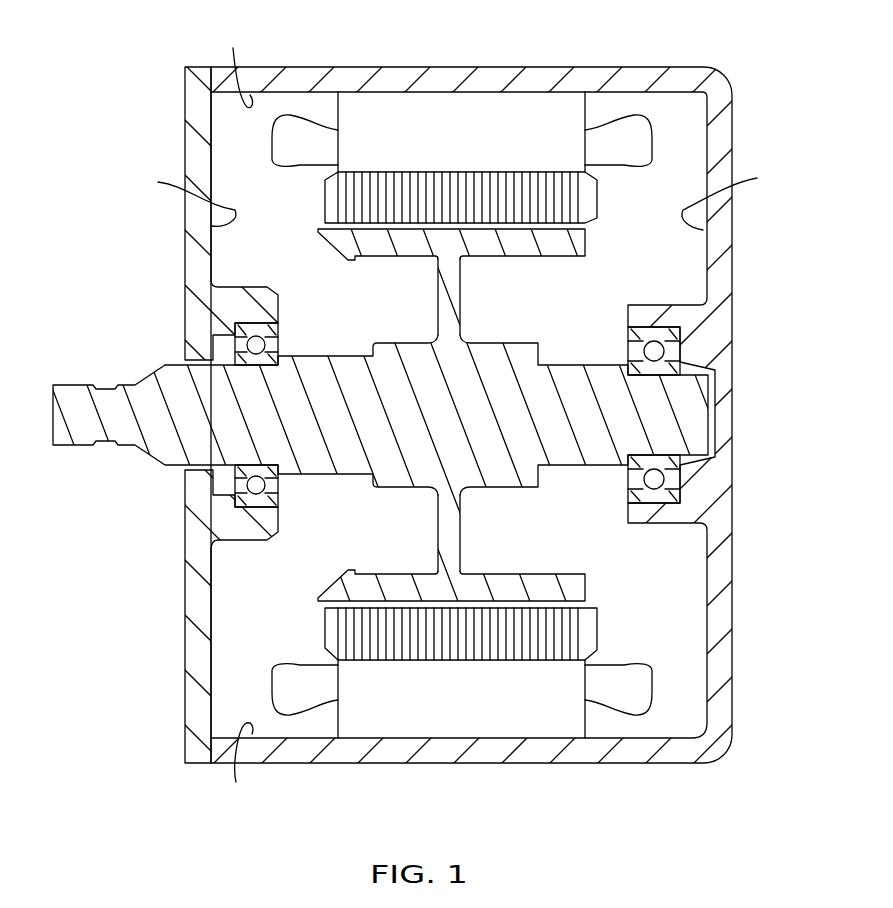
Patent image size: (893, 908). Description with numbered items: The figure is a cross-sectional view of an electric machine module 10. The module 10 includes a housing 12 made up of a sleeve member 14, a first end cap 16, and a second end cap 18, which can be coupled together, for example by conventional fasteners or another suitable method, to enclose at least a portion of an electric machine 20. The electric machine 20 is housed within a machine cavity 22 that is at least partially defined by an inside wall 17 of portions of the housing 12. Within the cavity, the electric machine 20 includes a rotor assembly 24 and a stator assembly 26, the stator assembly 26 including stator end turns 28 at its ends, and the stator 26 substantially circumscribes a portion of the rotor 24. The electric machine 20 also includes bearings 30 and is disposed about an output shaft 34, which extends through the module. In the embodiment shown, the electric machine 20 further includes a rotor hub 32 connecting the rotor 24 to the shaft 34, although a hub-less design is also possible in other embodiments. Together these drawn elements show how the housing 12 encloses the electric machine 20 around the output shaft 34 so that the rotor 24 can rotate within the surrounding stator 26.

The electric machine module 10 is at (112, 65).
The housing 12 is at (447, 67).
The sleeve member 14 is at (545, 67).
The first end cap 16 is at (722, 73).
The inside wall 17 is at (456, 418).
The second end cap 18 is at (185, 82).
The electric machine 20 is at (452, 413).
The machine cavity 22 is at (414, 417).
The rotor assembly 24 is at (305, 600).
The stator assembly 26 is at (604, 655).
The stator end turns 28 is at (638, 118).
The bearings 30 is at (253, 344).
The rotor hub 32 is at (438, 300).
The output shaft 34 is at (53, 388).